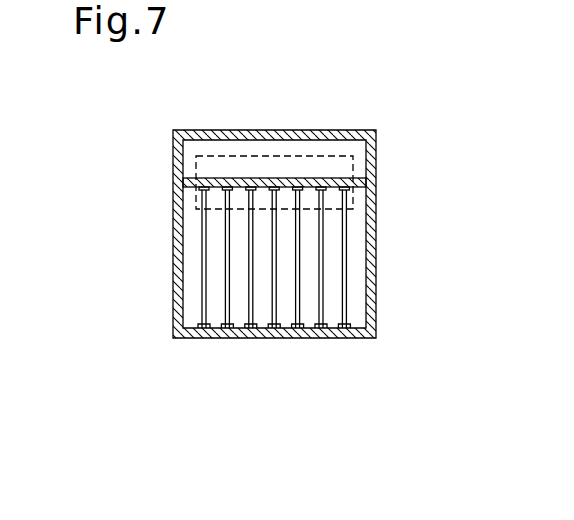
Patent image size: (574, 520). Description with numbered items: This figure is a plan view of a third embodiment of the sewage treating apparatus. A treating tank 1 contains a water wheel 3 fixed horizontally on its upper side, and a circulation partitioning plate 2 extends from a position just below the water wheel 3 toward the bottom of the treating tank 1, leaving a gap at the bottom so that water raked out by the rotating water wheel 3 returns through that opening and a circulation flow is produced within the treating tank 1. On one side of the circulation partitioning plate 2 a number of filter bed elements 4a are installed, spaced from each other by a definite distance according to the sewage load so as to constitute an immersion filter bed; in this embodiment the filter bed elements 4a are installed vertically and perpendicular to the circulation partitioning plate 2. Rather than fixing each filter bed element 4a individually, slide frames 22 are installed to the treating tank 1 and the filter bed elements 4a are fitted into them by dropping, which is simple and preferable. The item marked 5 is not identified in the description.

The treating tank 1 is at (315, 338).
The circulation partitioning plate 2 is at (315, 183).
The water wheel 3 is at (263, 157).
The filter bed element 4a is at (345, 240).
The gap between electrode plates 5 is at (323, 275).
The slide frame 22 is at (278, 338).